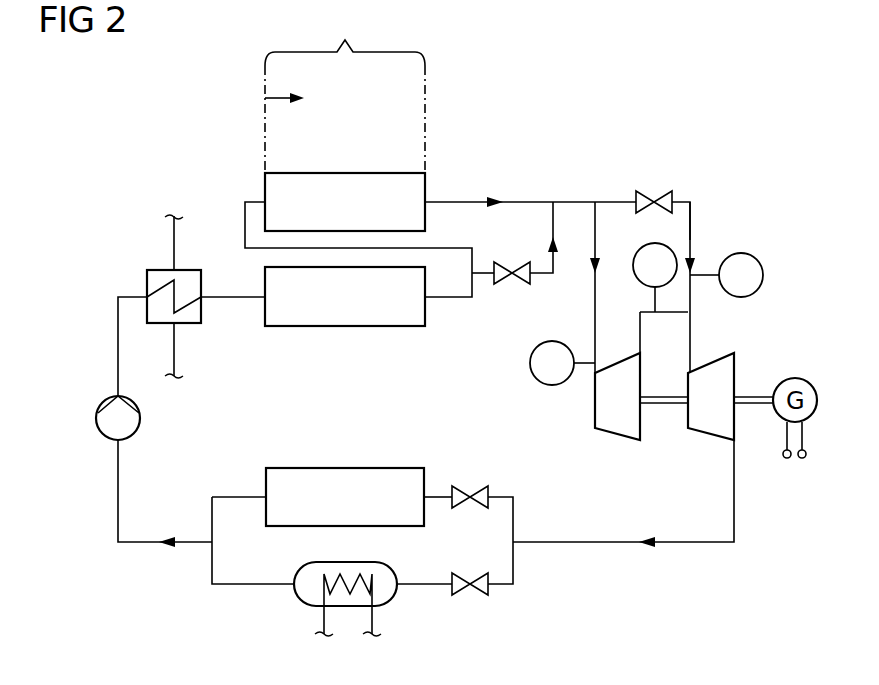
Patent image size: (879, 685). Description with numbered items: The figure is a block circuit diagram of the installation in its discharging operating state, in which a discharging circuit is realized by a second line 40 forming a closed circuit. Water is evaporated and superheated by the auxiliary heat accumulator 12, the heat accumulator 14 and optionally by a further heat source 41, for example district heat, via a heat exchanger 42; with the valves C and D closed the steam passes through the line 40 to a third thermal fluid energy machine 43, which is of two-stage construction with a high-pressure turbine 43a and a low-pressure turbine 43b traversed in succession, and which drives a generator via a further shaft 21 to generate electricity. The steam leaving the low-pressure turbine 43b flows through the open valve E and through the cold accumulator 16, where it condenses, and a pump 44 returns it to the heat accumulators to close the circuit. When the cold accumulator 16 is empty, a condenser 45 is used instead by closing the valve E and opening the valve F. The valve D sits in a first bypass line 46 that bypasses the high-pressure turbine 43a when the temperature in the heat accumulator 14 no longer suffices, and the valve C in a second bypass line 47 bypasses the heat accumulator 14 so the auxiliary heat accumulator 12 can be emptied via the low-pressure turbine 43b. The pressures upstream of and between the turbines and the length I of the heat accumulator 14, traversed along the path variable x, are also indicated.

The cooling section I is at (345, 36).
The auxiliary heat accumulator 12 is at (355, 326).
The heat accumulator 14 is at (368, 173).
The cold accumulator 16 is at (315, 467).
The further shaft 21 is at (748, 406).
The second line 40 is at (570, 202).
The further heat source 41 is at (174, 240).
The heat exchanger 42 is at (192, 323).
The third thermal fluid energy machine 43 is at (733, 462).
The high-pressure turbine 43a is at (595, 402).
The low-pressure turbine 43b is at (740, 367).
The pump 44 is at (96, 424).
The condenser 45 is at (294, 596).
The first bypass line 46 is at (690, 222).
The second bypass line 47 is at (541, 277).
The valve C is at (499, 283).
The valve D is at (650, 191).
The valve E is at (462, 487).
The valve F is at (465, 575).